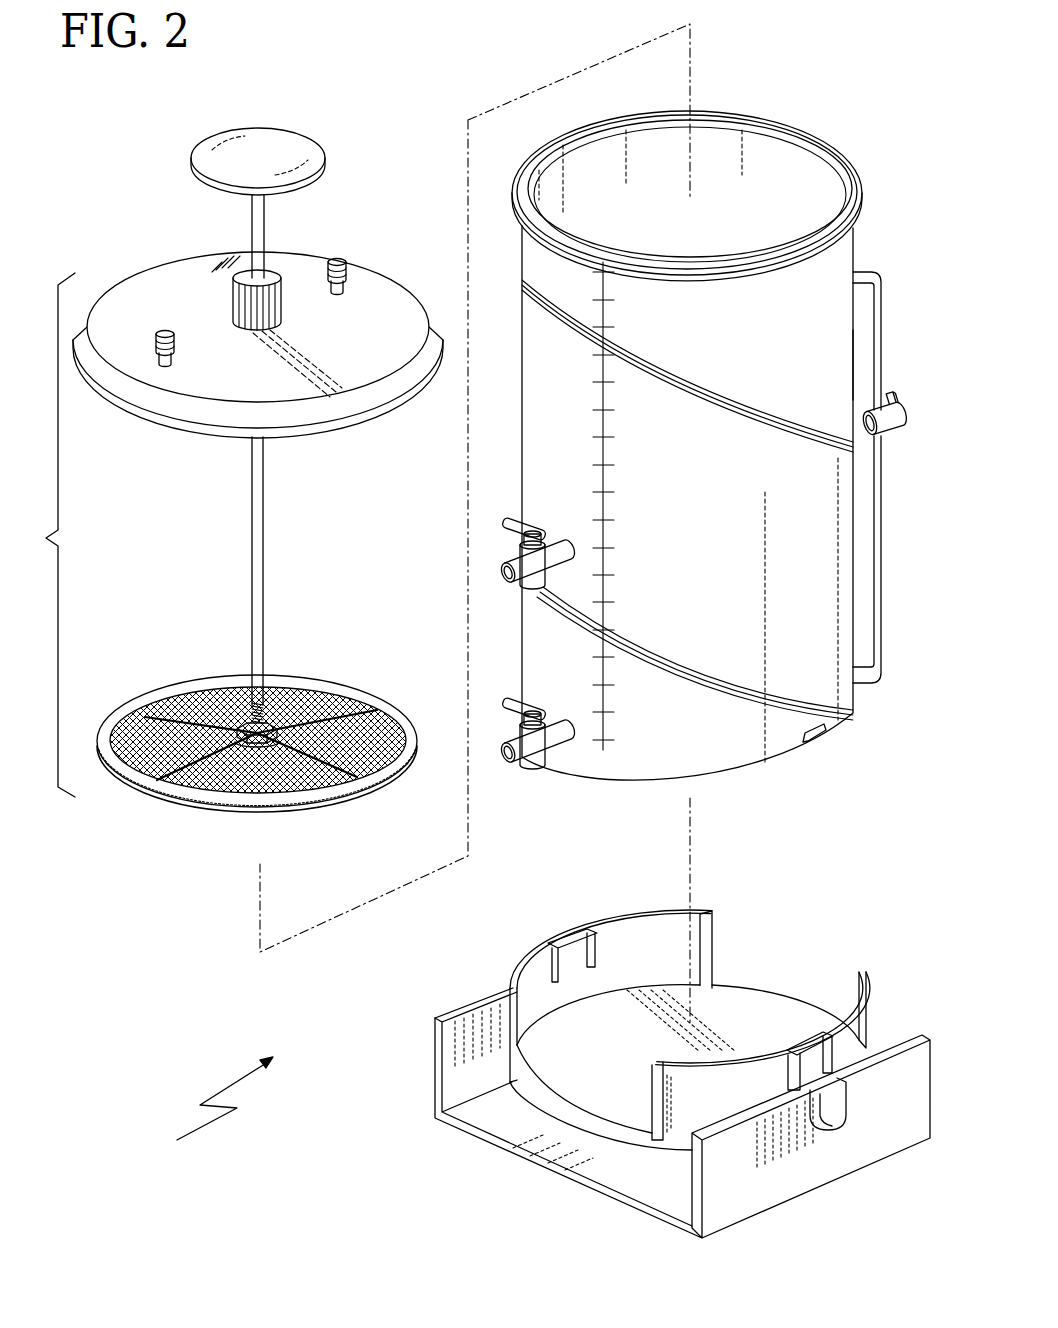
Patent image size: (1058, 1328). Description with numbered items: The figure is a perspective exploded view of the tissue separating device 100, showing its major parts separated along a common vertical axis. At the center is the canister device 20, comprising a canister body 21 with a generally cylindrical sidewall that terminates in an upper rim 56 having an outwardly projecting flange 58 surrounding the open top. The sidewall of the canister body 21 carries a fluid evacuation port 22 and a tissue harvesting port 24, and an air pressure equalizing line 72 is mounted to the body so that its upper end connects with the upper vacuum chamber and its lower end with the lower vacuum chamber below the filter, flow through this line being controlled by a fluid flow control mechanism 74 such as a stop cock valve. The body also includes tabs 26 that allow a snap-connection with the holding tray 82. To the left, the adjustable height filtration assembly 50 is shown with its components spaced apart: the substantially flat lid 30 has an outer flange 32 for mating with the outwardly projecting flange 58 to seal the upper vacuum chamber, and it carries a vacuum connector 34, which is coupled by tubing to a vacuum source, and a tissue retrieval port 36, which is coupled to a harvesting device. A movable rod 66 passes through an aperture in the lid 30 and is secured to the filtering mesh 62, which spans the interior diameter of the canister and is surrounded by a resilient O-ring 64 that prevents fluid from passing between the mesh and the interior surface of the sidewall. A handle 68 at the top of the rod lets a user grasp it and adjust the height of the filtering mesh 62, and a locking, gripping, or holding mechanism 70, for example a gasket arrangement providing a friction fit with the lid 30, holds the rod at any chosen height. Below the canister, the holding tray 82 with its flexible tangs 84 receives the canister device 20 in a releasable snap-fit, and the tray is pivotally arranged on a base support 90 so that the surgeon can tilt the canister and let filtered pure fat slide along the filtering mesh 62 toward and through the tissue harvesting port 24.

The tissue separating device 100 is at (200, 1109).
The canister device 20 is at (785, 113).
The canister body 21 is at (859, 363).
The fluid evacuation port 22 is at (514, 748).
The tissue harvesting port 24 is at (519, 562).
The tabs 26 is at (826, 729).
The lid 30 is at (378, 308).
The outer flange 32 is at (402, 395).
The vacuum connector 34 is at (158, 332).
The tissue retrieval port 36 is at (339, 261).
The adjustable height filtration assembly 50 is at (43, 535).
The upper rim 56 is at (862, 229).
The outwardly projecting flange 58 is at (863, 190).
The filtering mesh 62 is at (140, 700).
The resilient O-ring 64 is at (340, 802).
The movable rod 66 is at (262, 212).
The handle 68 is at (262, 138).
The locking, gripping, or holding mechanism 70 is at (240, 273).
The air pressure equalizing line 72 is at (883, 553).
The fluid flow control mechanism 74 is at (901, 433).
The holding tray 82 is at (866, 1028).
The flexible tangs 84 is at (565, 933).
The base support 90 is at (888, 1125).